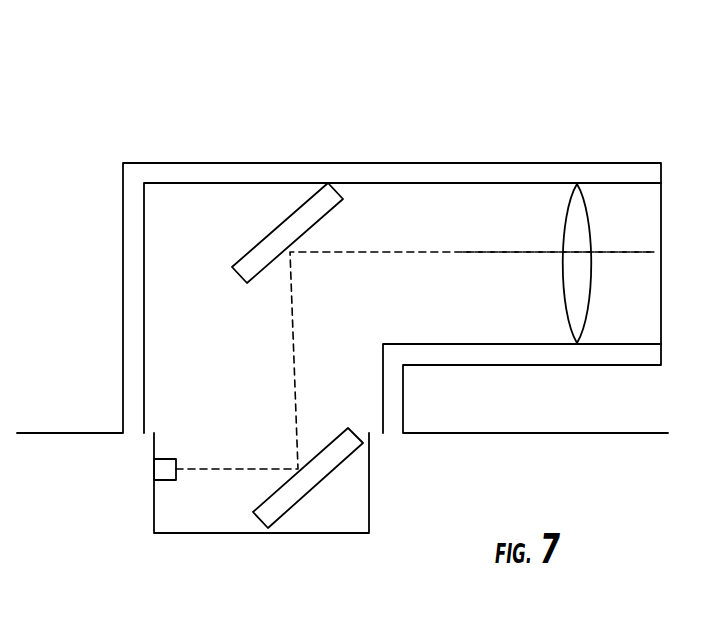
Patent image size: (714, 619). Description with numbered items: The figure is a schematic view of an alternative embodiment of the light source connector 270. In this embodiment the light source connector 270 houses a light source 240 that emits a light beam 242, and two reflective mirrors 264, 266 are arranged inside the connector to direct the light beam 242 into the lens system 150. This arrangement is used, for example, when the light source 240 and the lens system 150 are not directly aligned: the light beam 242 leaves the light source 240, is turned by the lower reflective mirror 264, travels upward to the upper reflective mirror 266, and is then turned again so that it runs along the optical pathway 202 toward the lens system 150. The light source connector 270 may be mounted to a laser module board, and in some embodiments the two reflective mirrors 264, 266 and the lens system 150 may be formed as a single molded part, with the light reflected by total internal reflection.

The light source connector 270 is at (288, 99).
The reflective mirror 266 is at (273, 228).
The reflective mirror 264 is at (310, 490).
The lens system 150 is at (588, 213).
The light source 240 is at (153, 470).
The light beam 242 is at (210, 471).
The optical pathway 202 is at (463, 252).